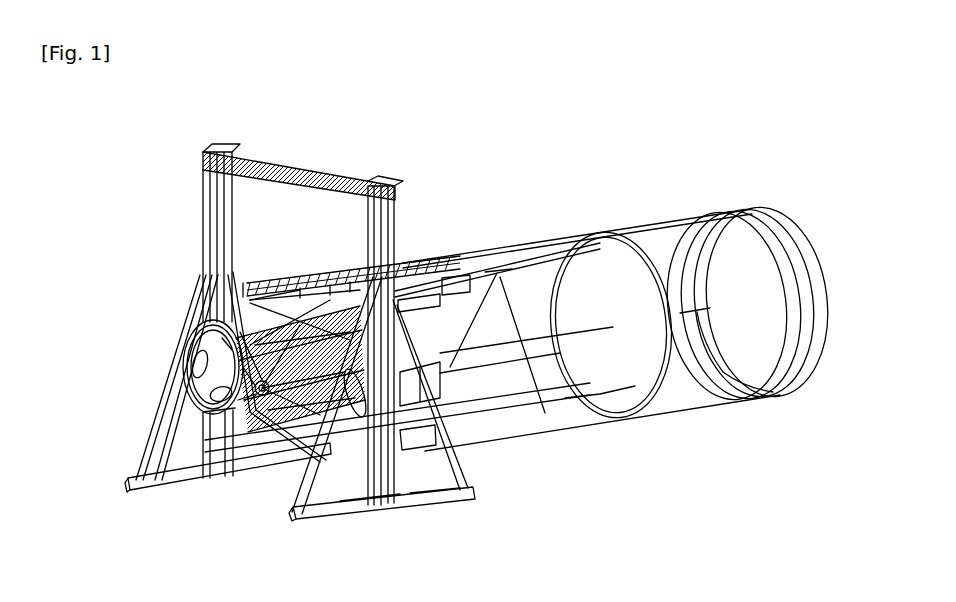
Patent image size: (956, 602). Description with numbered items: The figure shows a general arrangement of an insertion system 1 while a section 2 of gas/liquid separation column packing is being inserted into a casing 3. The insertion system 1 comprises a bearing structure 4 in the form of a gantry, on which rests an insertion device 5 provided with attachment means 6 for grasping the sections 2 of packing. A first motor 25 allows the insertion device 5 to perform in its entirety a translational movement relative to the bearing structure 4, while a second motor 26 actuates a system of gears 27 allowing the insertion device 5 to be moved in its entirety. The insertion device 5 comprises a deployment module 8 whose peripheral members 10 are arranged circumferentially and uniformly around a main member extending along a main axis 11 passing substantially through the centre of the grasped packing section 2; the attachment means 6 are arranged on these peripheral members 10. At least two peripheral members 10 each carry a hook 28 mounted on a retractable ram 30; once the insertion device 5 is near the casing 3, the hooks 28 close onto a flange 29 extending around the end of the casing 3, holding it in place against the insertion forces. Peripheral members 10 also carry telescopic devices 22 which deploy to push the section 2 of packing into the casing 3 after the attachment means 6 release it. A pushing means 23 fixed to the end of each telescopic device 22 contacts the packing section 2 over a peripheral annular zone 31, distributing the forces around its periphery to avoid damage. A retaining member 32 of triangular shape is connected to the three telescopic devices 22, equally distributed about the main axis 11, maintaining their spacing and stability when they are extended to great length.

The insertion system 1 is at (166, 190).
The section of packing 2 is at (632, 228).
The casing 3 is at (703, 409).
The bearing structure 4 is at (236, 146).
The insertion device 5 is at (284, 263).
The attachment means 6 is at (425, 300).
The deployment module 8 is at (264, 472).
The peripheral members 10 is at (196, 312).
The main axis 11 is at (740, 378).
The telescopic devices 22 is at (476, 405).
The pushing means 23 is at (540, 266).
The first motor 25 is at (372, 510).
The second motor 26 is at (346, 298).
The system of gears 27 is at (172, 344).
The hook 28 is at (445, 284).
The flange 29 is at (407, 298).
The retractable ram 30 is at (430, 498).
The peripheral annular zone 31 is at (593, 406).
The retaining member 32 is at (525, 290).